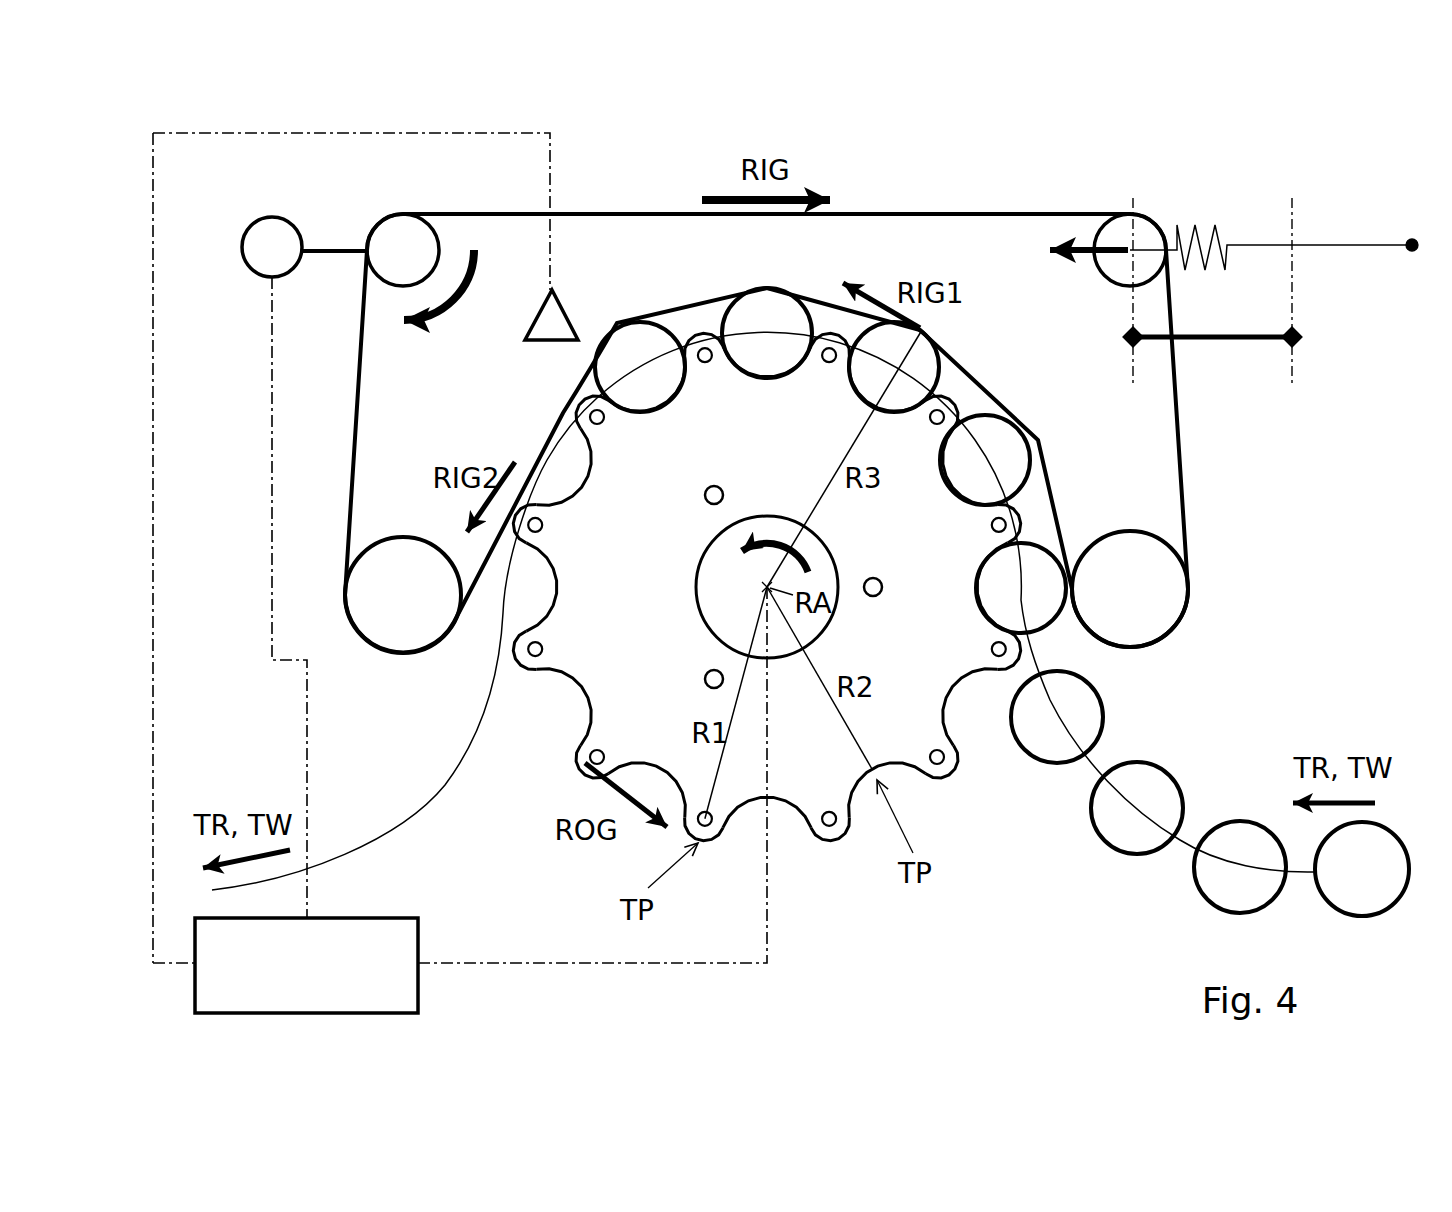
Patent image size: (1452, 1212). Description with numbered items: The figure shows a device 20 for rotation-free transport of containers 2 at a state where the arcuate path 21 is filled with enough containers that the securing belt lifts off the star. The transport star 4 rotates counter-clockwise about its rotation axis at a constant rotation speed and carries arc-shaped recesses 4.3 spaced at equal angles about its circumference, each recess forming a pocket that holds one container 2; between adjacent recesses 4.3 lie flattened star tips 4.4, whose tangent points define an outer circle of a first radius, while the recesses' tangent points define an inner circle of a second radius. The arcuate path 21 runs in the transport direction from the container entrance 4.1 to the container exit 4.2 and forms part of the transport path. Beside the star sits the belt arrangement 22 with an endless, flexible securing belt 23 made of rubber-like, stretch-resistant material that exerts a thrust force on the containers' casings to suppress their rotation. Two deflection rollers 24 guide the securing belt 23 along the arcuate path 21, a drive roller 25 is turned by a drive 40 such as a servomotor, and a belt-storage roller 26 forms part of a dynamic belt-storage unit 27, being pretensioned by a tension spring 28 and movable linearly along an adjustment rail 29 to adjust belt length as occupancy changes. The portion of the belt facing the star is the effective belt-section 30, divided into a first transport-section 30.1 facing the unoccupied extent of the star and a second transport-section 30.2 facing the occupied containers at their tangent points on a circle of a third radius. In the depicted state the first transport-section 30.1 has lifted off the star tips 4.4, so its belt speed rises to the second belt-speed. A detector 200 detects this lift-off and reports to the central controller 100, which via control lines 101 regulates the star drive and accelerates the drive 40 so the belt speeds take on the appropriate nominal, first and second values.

The container 2 is at (1157, 787).
The transport star 4 is at (784, 646).
The container entrance 4.1 is at (1082, 655).
The container exit 4.2 is at (473, 658).
The recess 4.3 is at (967, 709).
The star tip 4.4 is at (951, 775).
The device 20 is at (282, 181).
The arcuate path 21 is at (766, 379).
The belt arrangement 22 is at (928, 185).
The securing belt 23 is at (562, 213).
The deflection roller 24 is at (398, 618).
The drive roller 25 is at (380, 258).
The belt-storage roller 26 is at (1112, 232).
The dynamic belt-storage unit 27 is at (1270, 280).
The tension spring 28 is at (1230, 272).
The adjustment rail 29 is at (1238, 347).
The effective belt-section 30 is at (793, 288).
The first transport-section 30.1 is at (520, 403).
The second transport-section 30.2 is at (978, 368).
The drive 40 is at (258, 262).
The central controller 100 is at (306, 965).
The control line 101 is at (157, 468).
The detector 200 is at (540, 313).